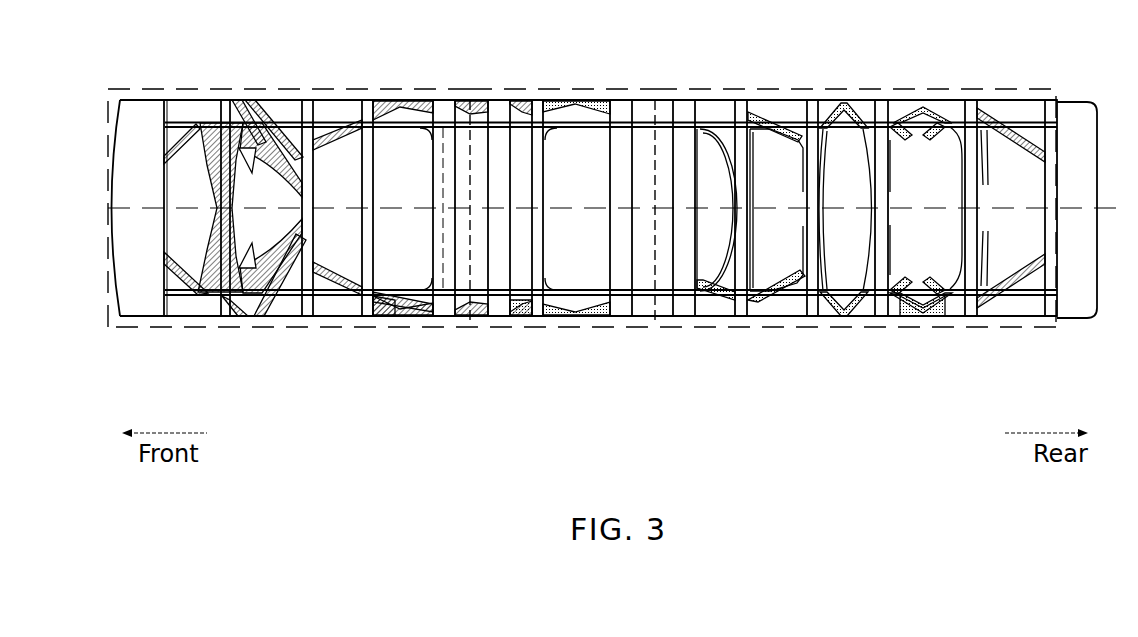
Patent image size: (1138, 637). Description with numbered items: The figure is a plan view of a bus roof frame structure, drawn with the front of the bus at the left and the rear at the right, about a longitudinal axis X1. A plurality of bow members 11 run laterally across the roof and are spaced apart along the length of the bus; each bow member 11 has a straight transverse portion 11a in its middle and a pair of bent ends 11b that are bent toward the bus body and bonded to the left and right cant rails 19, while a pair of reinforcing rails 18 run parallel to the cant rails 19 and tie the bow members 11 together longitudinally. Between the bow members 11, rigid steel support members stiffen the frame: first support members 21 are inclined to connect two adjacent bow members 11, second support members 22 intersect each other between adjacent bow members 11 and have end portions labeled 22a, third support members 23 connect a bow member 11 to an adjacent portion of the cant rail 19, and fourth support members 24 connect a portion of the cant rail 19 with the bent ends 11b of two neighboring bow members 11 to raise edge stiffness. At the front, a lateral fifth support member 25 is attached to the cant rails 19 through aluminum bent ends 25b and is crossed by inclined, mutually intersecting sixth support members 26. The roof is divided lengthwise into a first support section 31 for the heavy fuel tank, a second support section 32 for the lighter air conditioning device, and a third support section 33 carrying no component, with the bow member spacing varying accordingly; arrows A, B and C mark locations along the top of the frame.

The bow member 11 is at (446, 84).
The transverse portion 11a is at (442, 224).
The bent end 11b is at (432, 97).
The reinforcing rail 18 is at (173, 318).
The cant rail 19 is at (207, 318).
The first support member 21 is at (1010, 97).
The second support member 22 is at (382, 318).
The brace end portion 22a is at (397, 318).
The third support member 23 is at (833, 282).
The fourth support member 24 is at (1040, 273).
The fifth support member 25 is at (167, 243).
The bent end 25b is at (225, 98).
The sixth support member 26 is at (167, 145).
The first support section 31 is at (258, 90).
The second support section 32 is at (907, 88).
The third support section 33 is at (650, 325).
The longitudinal axis X1 is at (1112, 207).
The section line A is at (323, 82).
The section line B is at (938, 82).
The section line C is at (580, 82).